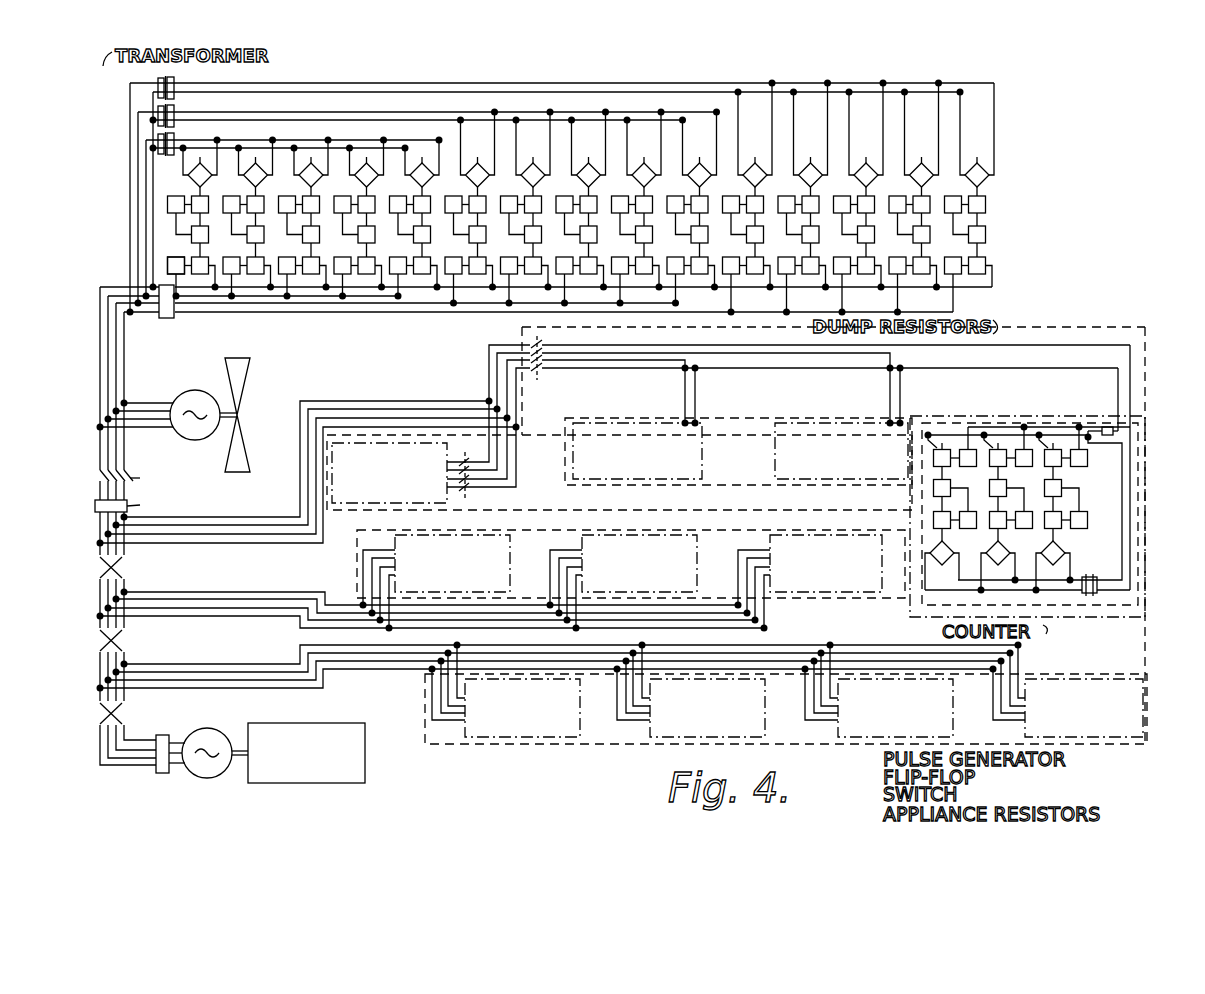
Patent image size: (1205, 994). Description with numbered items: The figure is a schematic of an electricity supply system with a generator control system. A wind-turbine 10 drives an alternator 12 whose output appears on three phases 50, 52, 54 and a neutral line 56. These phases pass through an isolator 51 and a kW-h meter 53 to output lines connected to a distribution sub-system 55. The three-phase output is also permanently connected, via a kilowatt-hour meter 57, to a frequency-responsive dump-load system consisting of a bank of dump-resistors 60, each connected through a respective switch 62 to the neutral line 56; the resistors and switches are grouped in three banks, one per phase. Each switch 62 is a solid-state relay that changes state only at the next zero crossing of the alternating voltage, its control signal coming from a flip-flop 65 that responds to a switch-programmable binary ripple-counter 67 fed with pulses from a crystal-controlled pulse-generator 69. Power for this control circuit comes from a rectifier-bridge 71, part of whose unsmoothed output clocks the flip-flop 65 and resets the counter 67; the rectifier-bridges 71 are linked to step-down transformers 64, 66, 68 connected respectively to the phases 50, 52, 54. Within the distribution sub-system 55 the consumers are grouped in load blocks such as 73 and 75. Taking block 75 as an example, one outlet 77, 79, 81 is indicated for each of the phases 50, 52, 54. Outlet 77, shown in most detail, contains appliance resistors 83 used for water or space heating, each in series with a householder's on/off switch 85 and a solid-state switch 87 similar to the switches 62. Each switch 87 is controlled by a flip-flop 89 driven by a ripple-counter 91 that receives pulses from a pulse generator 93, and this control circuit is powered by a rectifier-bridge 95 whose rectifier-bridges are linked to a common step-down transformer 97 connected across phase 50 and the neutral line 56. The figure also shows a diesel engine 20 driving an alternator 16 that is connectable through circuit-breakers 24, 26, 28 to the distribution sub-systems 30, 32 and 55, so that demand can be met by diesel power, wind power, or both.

The wind-turbine 10 is at (242, 380).
The alternator 12 is at (195, 441).
The alternator 16 is at (226, 737).
The diesel engine 20 is at (318, 729).
The circuit-breaker 24 is at (121, 714).
The circuit-breaker 26 is at (121, 641).
The circuit-breaker 28 is at (121, 568).
The distribution sub-system 30 is at (425, 728).
The distribution sub-system 32 is at (357, 533).
The phase 50 is at (100, 371).
The isolator 51 is at (100, 480).
The phase 52 is at (116, 373).
The kW-h meter 53 is at (95, 508).
The phase 54 is at (108, 351).
The distribution sub-system 55 is at (1062, 327).
The neutral line 56 is at (100, 443).
The kilowatt-hour meter 57 is at (163, 318).
The dump-resistor 60 is at (180, 259).
The switch 62 is at (986, 266).
The step-down transformer 64 is at (158, 82).
The flip-flop 65 is at (986, 236).
The step-down transformer 66 is at (158, 110).
The ripple-counter 67 is at (986, 206).
The step-down transformer 68 is at (158, 139).
The pulse-generator 69 is at (955, 201).
The rectifier-bridge 71 is at (990, 170).
The load block 73 is at (447, 505).
The load block 75 is at (916, 418).
The outlet 77 is at (985, 423).
The outlet 79 is at (775, 468).
The outlet 81 is at (702, 455).
The appliance resistor 83 is at (1140, 815).
The on/off switch 85 is at (1044, 440).
The solid-state switch 87 is at (975, 796).
The flip-flop 89 is at (1072, 497).
The ripple-counter 91 is at (1046, 527).
The pulse generator 93 is at (1002, 779).
The rectifier-bridge 95 is at (1093, 760).
The step-down transformer 97 is at (1088, 596).